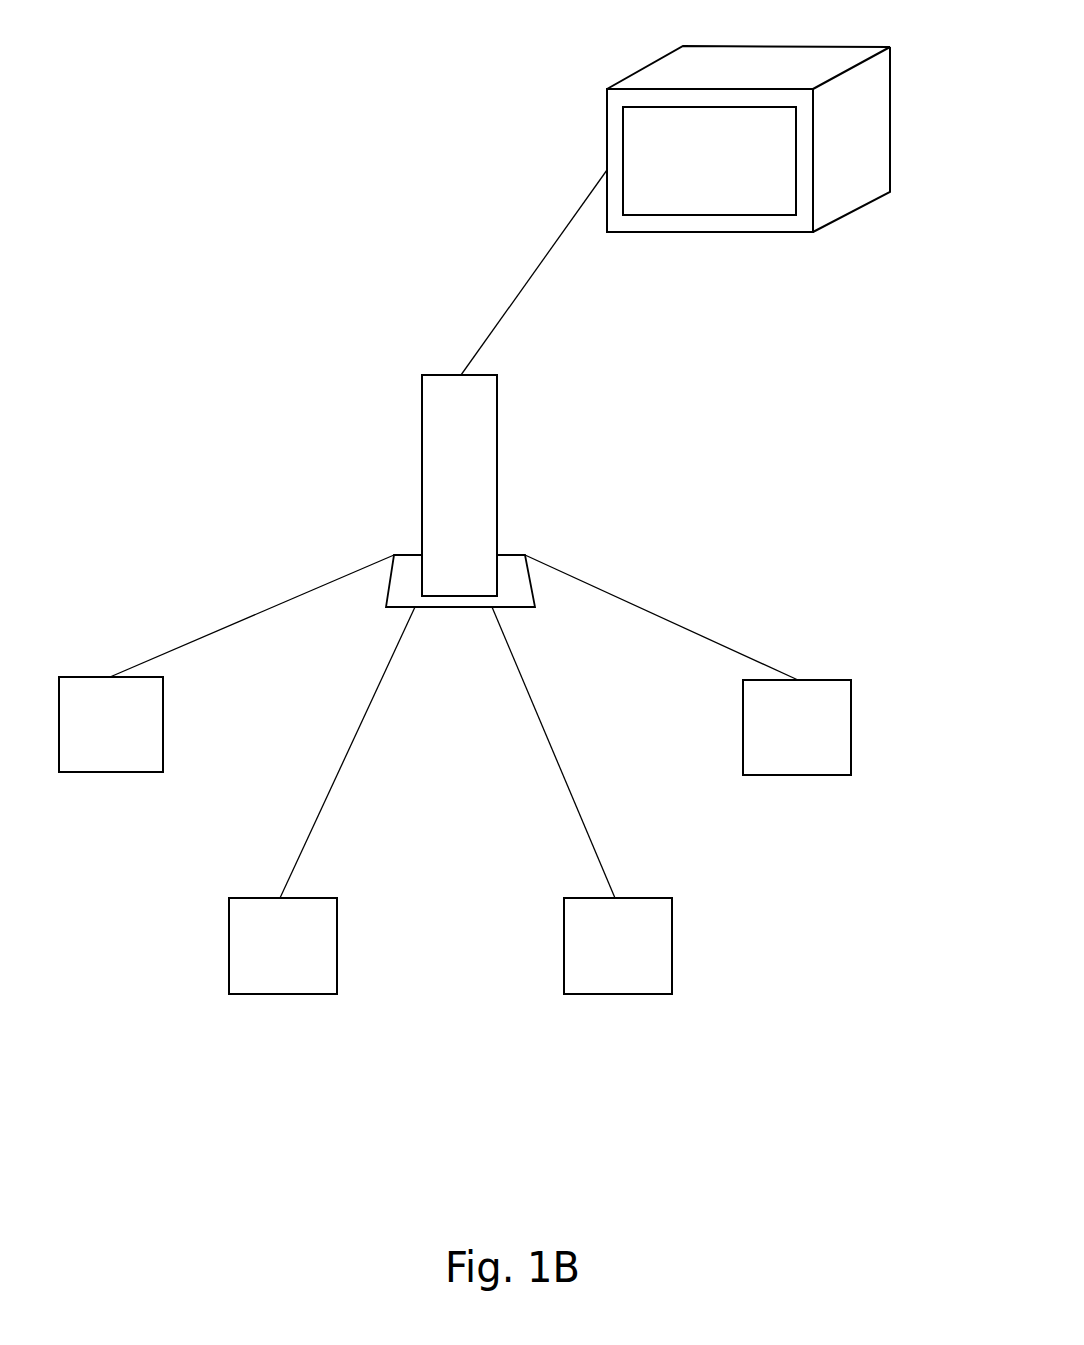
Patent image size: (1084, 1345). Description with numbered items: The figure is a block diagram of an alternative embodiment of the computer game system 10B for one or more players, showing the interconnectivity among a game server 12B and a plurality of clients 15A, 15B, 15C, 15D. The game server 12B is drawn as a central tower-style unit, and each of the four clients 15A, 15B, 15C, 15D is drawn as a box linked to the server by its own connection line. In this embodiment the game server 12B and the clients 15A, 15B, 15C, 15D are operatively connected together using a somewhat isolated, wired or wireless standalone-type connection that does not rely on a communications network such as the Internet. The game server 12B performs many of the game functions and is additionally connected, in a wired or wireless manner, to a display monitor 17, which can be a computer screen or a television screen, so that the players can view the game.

The computer game system 10B is at (365, 393).
The game server 12B is at (482, 488).
The client 15A is at (90, 759).
The client 15B is at (247, 981).
The client 15C is at (605, 981).
The client 15D is at (780, 762).
The display monitor 17 is at (846, 190).